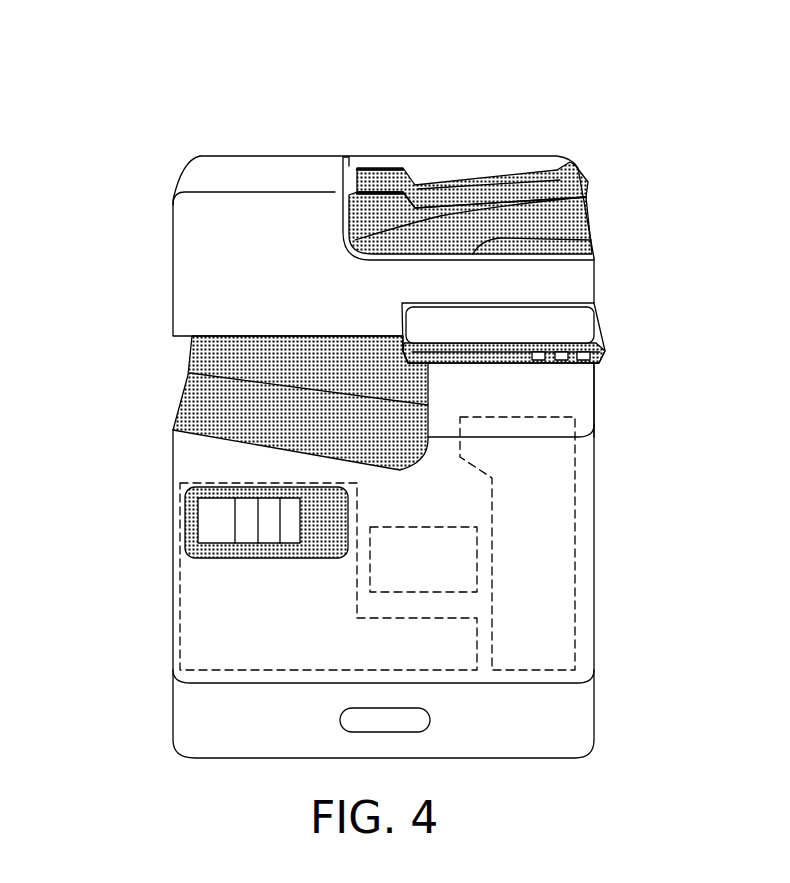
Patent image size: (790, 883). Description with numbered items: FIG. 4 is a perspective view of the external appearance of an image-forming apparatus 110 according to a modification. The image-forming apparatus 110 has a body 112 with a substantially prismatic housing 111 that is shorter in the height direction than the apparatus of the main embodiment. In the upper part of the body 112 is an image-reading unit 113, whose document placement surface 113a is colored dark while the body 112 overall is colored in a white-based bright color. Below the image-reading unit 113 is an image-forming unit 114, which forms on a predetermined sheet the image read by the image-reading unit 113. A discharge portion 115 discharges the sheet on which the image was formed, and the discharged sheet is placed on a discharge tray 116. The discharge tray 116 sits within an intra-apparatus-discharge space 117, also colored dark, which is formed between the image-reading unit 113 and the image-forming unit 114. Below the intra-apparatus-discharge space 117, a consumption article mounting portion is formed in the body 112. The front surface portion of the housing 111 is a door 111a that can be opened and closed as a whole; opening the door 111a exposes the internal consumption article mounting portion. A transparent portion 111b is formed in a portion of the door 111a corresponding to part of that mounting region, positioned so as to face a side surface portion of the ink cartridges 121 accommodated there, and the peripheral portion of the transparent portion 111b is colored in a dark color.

The image-forming apparatus 110 is at (438, 102).
The housing 111 is at (170, 657).
The door 111a is at (187, 456).
The transparent portion 111b is at (213, 551).
The body 112 is at (594, 405).
The image-reading unit 113 is at (622, 152).
The document placement surface 113a is at (390, 217).
The image-forming unit 114 is at (420, 528).
The discharge portion 115 is at (575, 607).
The discharge tray 116 is at (278, 428).
The intra-apparatus-discharge space 117 is at (300, 397).
The ink cartridges 121 is at (290, 503).